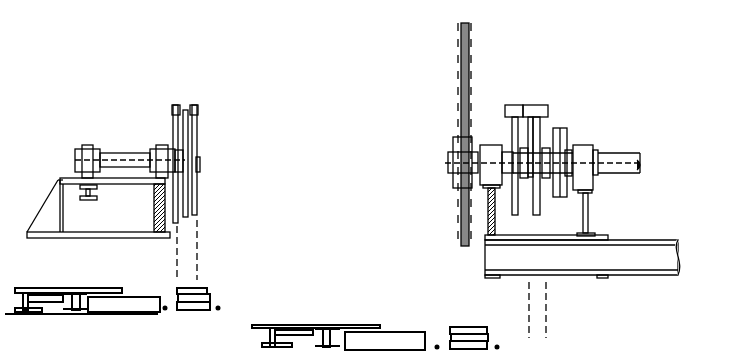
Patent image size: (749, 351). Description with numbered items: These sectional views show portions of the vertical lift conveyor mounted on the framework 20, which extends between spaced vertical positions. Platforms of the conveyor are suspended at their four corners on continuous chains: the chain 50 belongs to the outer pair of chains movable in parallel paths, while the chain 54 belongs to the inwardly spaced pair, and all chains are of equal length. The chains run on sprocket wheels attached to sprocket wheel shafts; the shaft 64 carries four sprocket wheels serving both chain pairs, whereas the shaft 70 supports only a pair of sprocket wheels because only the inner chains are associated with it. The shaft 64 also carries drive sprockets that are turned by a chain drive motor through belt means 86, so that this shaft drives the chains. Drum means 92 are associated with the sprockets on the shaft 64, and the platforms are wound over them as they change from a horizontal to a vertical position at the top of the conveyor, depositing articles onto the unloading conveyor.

In FIG. 5, the framework 20 is at (52, 195).
In FIG. 6, the framework 20 is at (600, 236).
In FIG. 6, the chain 50 is at (506, 107).
In FIG. 5, the chain 54 is at (197, 237).
In FIG. 6, the chain 54 is at (545, 107).
In FIG. 6, the sprocket wheel shaft 64 is at (452, 165).
In FIG. 5, the sprocket wheel shaft 70 is at (120, 153).
In FIG. 6, the belt means 86 is at (467, 41).
In FIG. 6, the drum means 92 is at (566, 131).